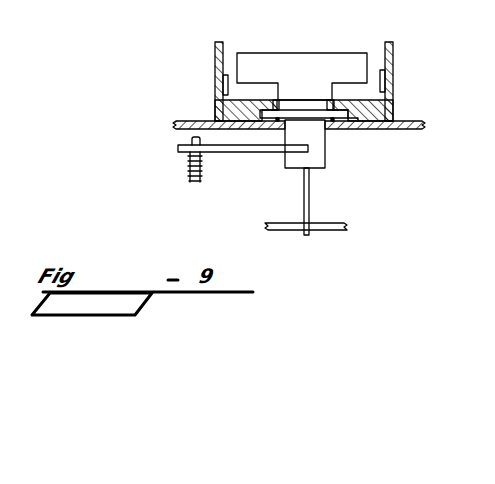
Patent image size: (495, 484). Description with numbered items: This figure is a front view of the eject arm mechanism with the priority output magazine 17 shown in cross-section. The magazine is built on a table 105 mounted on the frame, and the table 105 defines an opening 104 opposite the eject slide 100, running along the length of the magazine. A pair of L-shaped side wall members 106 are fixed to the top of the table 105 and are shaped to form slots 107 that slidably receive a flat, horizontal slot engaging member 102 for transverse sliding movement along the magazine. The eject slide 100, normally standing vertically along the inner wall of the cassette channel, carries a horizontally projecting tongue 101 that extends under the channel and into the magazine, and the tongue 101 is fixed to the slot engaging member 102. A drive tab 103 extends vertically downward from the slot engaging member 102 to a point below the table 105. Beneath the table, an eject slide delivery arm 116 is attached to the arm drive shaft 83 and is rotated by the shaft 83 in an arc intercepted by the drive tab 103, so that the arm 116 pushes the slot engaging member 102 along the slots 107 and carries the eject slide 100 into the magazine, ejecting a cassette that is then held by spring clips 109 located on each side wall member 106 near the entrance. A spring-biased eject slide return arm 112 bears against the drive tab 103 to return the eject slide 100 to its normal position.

The priority output magazine 17 is at (197, 60).
The arm drive shaft 83 is at (338, 233).
The eject slide 100 is at (293, 62).
The tongue 101 is at (312, 100).
The slot engaging member 102 is at (297, 110).
The drive tab 103 is at (287, 162).
The opening 104 is at (328, 130).
The table 105 is at (408, 128).
The L-shaped side wall members 106 is at (216, 45).
The slots 107 is at (357, 128).
The spring clips 109 is at (222, 81).
The eject slide return arm 112 is at (231, 153).
The eject slide delivery arm 116 is at (305, 195).